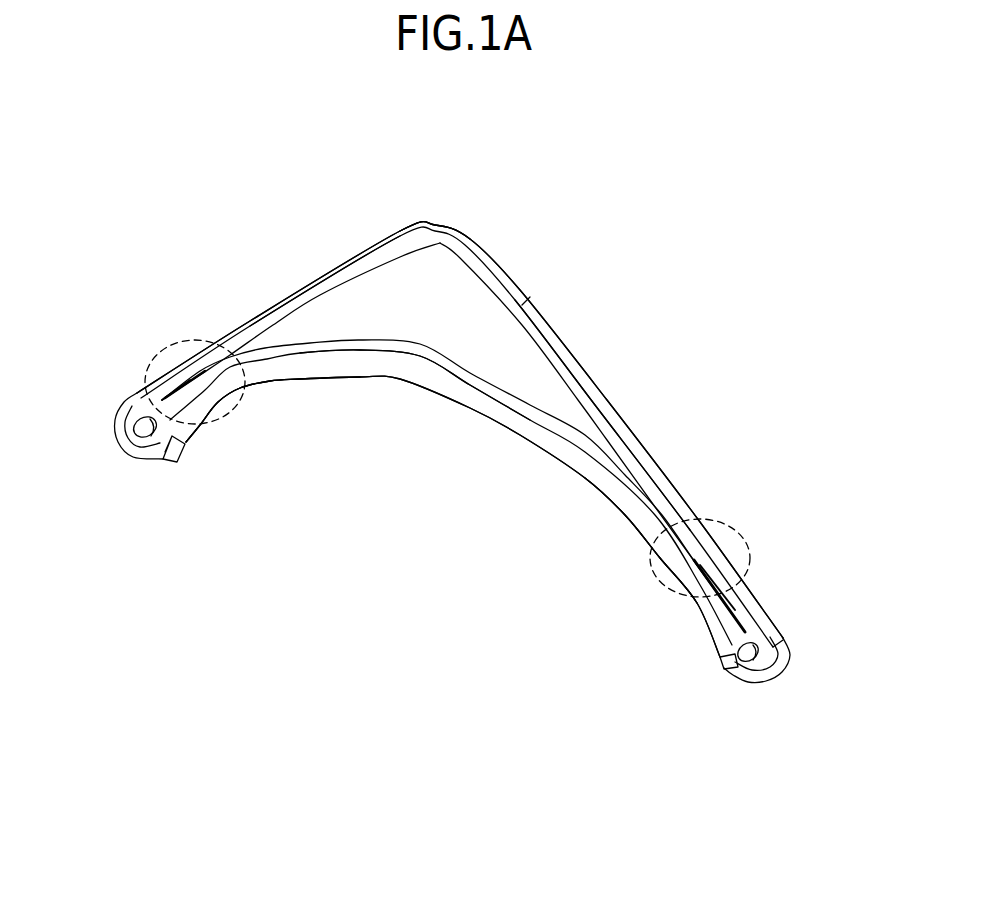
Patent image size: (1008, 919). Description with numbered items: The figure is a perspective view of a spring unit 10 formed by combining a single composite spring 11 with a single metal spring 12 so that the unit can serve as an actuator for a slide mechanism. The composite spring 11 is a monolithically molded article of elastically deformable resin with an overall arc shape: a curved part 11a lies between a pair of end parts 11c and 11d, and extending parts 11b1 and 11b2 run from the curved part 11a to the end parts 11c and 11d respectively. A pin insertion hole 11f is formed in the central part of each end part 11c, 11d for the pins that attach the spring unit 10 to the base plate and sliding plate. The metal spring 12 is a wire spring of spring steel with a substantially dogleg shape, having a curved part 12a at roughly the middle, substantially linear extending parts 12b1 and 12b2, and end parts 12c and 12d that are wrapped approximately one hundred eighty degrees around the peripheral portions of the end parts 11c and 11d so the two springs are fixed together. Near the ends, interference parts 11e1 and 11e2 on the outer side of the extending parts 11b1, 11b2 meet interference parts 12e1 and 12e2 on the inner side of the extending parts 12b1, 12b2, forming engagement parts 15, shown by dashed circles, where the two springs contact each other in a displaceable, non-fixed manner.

The spring unit 10 is at (670, 163).
The composite spring 11 is at (520, 435).
The curved part 11a is at (423, 378).
The extending part 11b1 is at (257, 380).
The extending part 11b2 is at (650, 530).
The end part 11c is at (117, 412).
The end part 11d is at (770, 650).
The interference part 11e1 is at (200, 420).
The interference part 11e2 is at (697, 590).
The pin insertion hole 11f is at (145, 435).
The metal spring 12 is at (525, 283).
The curved part 12a is at (444, 230).
The extending part 12b1 is at (313, 297).
The extending part 12b2 is at (620, 430).
The end part 12c is at (127, 450).
The end part 12d is at (768, 675).
The interference part 12e1 is at (195, 405).
The interference part 12e2 is at (700, 550).
The engagement part 15 is at (178, 347).